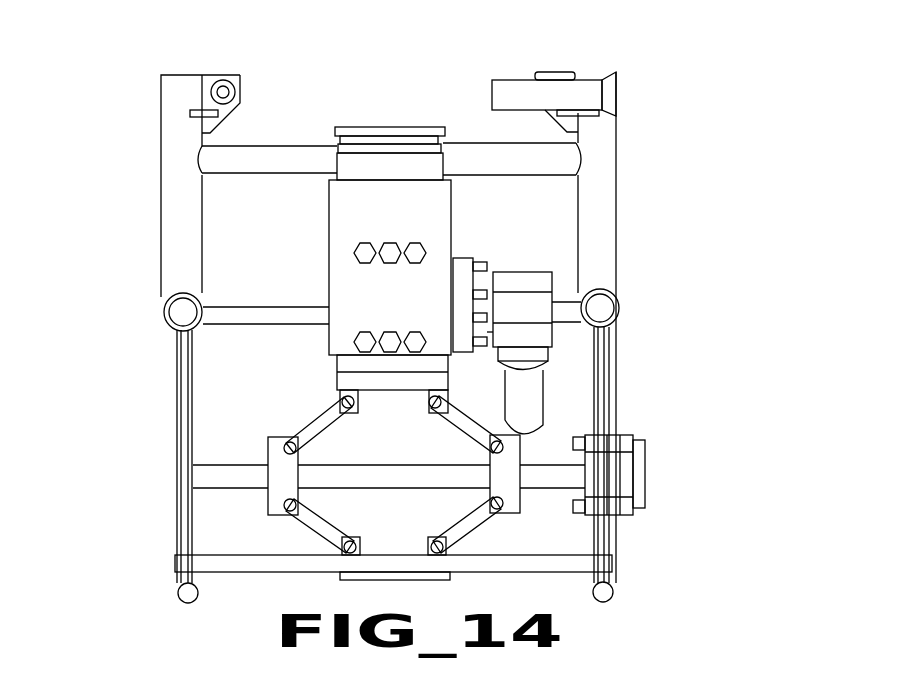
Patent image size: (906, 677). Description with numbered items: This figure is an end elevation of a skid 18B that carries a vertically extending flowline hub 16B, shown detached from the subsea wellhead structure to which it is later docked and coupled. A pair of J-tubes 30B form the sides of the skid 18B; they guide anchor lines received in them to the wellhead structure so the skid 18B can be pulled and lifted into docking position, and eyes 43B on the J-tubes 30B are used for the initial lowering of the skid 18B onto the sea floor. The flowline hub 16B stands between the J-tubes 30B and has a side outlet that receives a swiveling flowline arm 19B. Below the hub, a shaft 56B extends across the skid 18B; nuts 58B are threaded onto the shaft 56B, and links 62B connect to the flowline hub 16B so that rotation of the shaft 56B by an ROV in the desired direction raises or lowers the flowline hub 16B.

The skid 18B is at (696, 43).
The J-tubes 30B is at (160, 191).
The eyes 43B is at (240, 98).
The flowline hub 16B is at (448, 196).
The swiveling flowline arm 19B is at (543, 400).
The links 62B is at (458, 432).
The nuts 58B is at (268, 500).
The shaft 56B is at (385, 489).